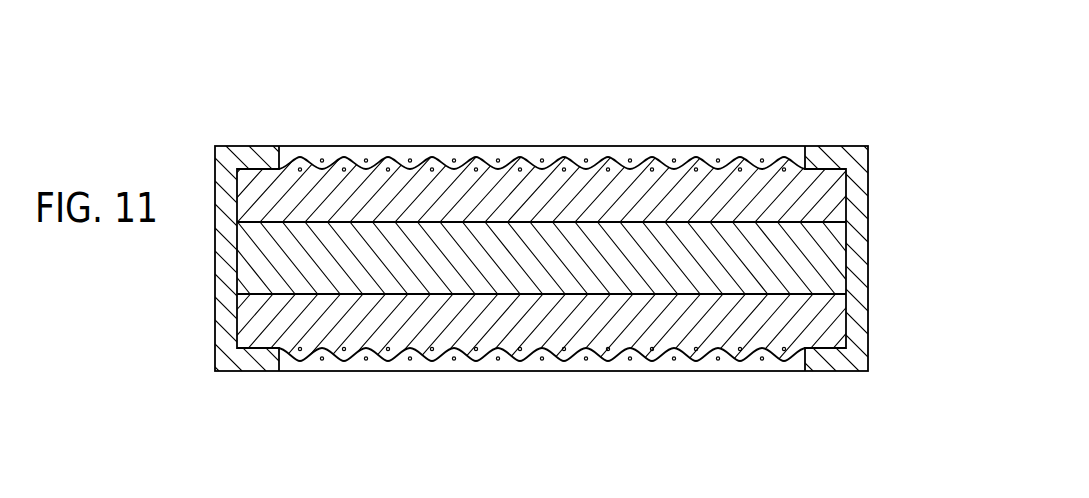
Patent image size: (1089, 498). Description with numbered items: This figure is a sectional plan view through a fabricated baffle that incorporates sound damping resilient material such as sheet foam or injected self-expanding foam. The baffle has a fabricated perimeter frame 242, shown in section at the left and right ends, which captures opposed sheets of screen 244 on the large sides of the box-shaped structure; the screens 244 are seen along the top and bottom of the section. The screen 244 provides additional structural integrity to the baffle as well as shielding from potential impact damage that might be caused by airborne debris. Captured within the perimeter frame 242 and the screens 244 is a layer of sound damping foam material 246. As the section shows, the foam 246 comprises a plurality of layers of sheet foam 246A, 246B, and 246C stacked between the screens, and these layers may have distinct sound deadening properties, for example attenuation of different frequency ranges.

The perimeter frame 242 is at (223, 259).
The screen 244 is at (578, 158).
The sound damping foam material 246 is at (615, 226).
The sheet foam layer 246A is at (770, 187).
The sheet foam layer 246B is at (822, 243).
The sheet foam layer 246C is at (823, 330).